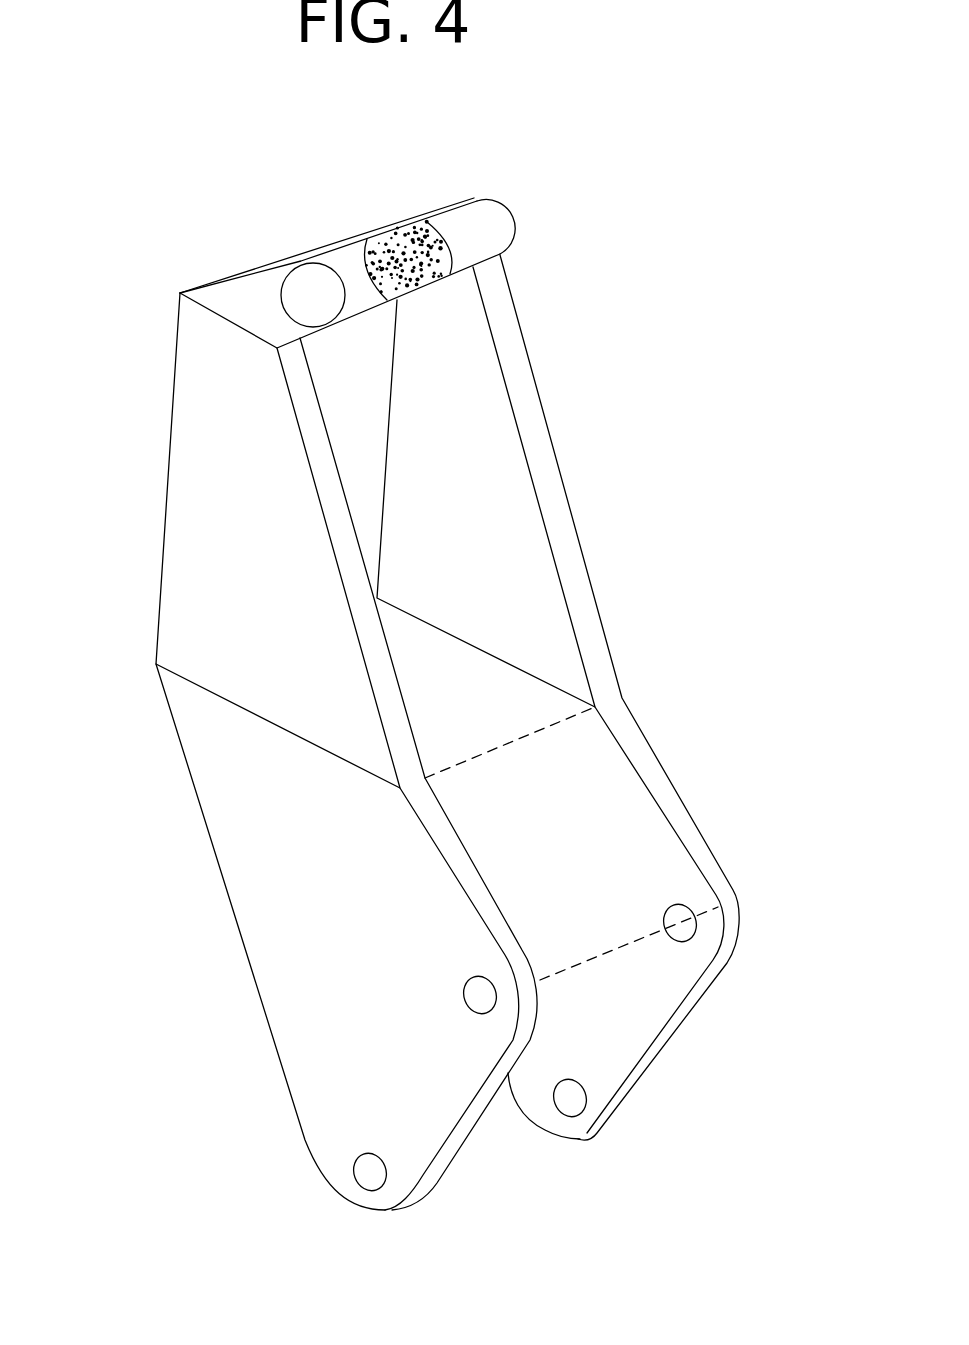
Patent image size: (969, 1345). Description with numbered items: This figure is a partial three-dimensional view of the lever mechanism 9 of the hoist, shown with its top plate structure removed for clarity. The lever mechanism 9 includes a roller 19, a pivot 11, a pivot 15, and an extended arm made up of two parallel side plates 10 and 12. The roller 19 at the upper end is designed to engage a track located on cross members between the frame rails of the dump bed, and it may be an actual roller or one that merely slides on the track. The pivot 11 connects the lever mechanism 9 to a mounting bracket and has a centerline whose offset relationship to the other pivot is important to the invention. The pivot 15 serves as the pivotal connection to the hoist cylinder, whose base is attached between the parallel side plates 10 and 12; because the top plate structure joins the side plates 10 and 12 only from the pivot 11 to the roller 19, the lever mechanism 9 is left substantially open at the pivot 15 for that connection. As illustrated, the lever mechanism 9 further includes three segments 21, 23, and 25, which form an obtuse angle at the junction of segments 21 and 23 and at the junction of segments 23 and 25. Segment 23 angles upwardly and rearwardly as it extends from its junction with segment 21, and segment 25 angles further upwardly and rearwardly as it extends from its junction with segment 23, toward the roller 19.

The lever mechanism 9 is at (744, 576).
The side plate 10 is at (325, 477).
The pivot 11 is at (483, 985).
The side plate 12 is at (543, 472).
The pivot 15 is at (375, 1173).
The roller 19 is at (410, 243).
The segment 21 is at (296, 986).
The segment 23 is at (198, 608).
The segment 25 is at (253, 297).